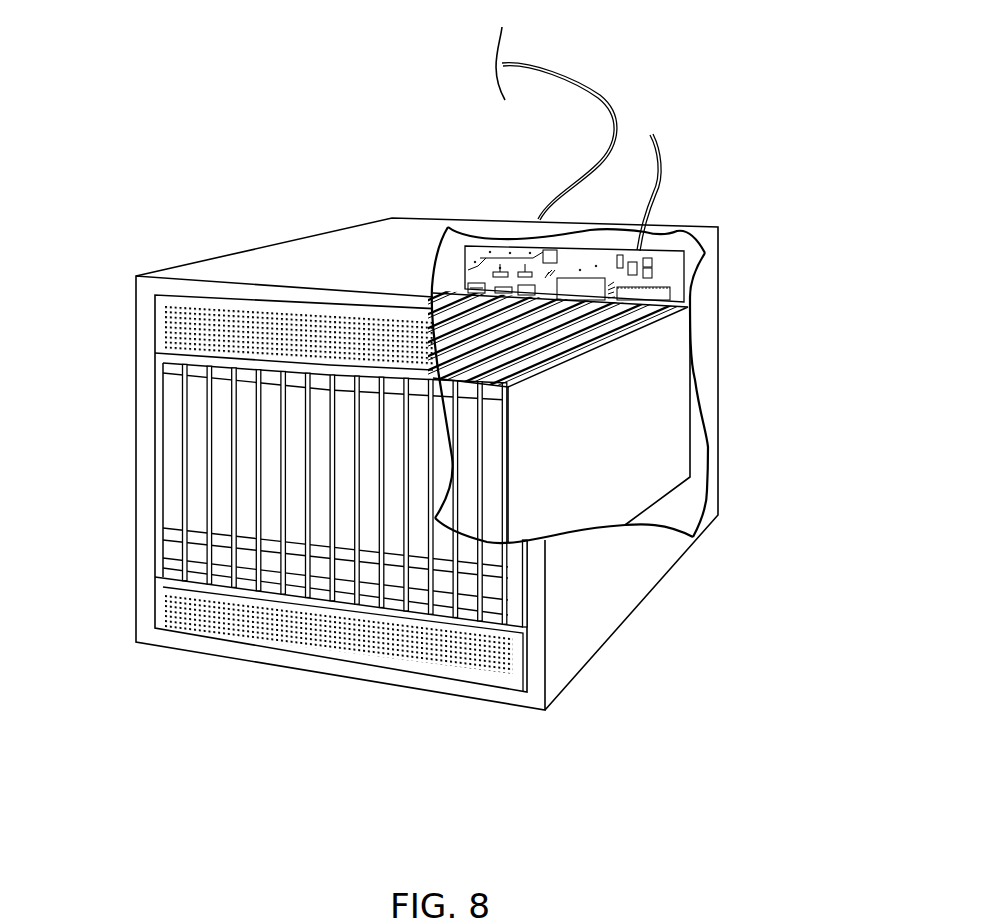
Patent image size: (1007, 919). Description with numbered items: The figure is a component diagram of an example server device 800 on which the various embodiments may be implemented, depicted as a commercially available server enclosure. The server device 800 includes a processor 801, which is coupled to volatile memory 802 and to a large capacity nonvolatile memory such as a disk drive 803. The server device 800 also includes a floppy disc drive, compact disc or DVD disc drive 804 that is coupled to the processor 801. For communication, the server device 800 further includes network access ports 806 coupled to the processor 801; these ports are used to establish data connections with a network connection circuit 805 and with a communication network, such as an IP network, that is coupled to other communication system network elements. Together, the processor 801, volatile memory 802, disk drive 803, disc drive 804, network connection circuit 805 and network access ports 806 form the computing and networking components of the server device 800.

The server device 800 is at (140, 179).
The processor 801 is at (550, 238).
The volatile memory 802 is at (610, 359).
The disk drive 803 is at (286, 495).
The disc drive 804 is at (285, 495).
The network connection circuit 805 is at (384, 233).
The network access ports 806 is at (589, 139).